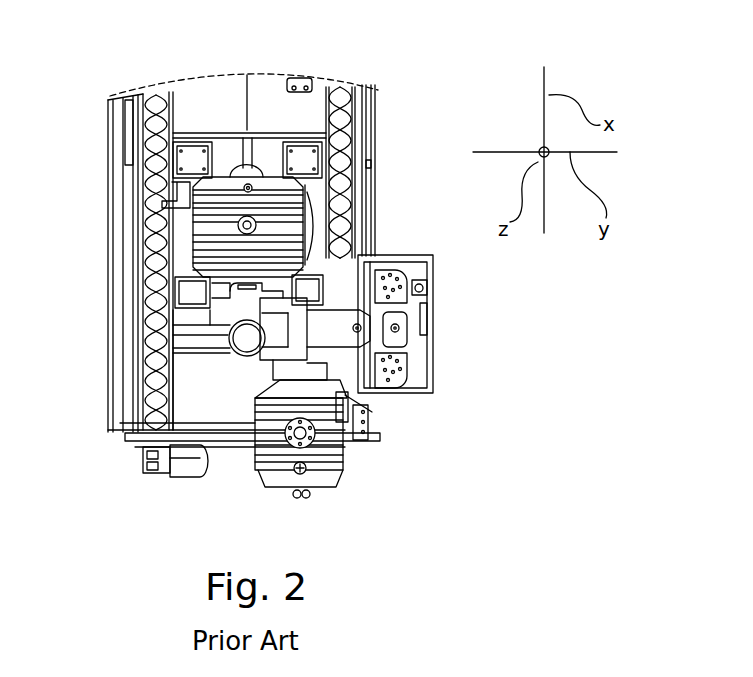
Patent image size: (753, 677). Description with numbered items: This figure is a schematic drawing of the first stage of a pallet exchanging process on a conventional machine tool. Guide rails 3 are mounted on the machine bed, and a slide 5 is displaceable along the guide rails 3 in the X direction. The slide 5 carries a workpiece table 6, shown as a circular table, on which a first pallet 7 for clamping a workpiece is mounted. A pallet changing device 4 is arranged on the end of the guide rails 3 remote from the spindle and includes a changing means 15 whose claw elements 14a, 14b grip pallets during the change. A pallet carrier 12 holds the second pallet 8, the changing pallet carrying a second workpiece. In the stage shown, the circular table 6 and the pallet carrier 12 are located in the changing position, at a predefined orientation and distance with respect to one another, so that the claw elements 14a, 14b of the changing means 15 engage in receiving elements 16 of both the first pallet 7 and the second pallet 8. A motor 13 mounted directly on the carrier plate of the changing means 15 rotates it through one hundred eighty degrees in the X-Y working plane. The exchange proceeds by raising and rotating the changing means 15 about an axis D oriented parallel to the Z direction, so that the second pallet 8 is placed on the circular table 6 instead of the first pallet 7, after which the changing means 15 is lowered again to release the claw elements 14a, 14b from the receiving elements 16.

The guide rails 3 is at (130, 95).
The pallet changing device 4 is at (458, 337).
The slide 5 is at (225, 128).
The workpiece table 6 is at (244, 167).
The first pallet 7 is at (272, 172).
The second pallet 8 is at (300, 468).
The pallet carrier 12 is at (356, 437).
The motor 13 is at (247, 303).
The upper bearing 14a is at (190, 272).
The lower bearing 14b is at (365, 397).
The changing means 15 is at (228, 350).
The receiving elements 16 is at (180, 305).
The axis of rotation D is at (185, 472).